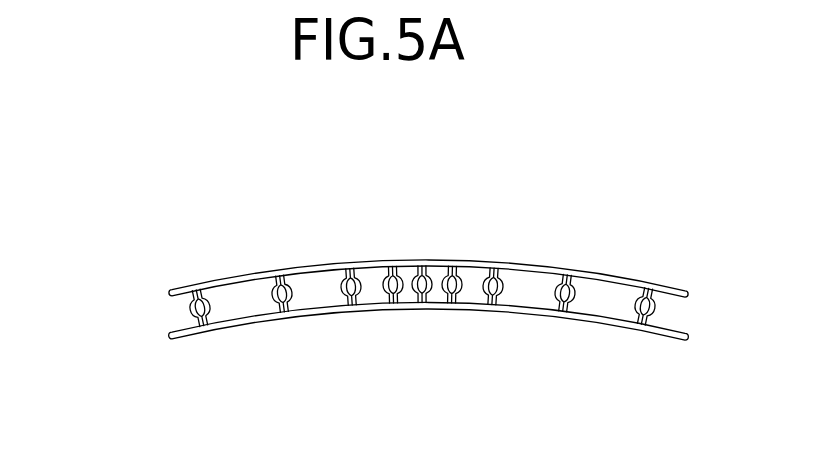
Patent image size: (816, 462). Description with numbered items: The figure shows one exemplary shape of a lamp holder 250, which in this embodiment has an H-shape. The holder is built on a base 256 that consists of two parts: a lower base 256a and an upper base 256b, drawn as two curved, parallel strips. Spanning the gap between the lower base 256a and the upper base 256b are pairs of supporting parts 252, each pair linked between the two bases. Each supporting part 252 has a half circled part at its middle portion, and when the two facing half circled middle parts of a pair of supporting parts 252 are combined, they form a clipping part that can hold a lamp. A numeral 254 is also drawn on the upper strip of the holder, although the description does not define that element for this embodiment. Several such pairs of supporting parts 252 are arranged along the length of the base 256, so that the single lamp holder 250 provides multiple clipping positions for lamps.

The lamp holder 250 is at (443, 218).
The supporting parts 252 is at (183, 330).
The upper substrate strip 254 is at (208, 288).
The base 256 is at (287, 367).
The lower base 256a is at (216, 331).
The upper base 256b is at (258, 279).